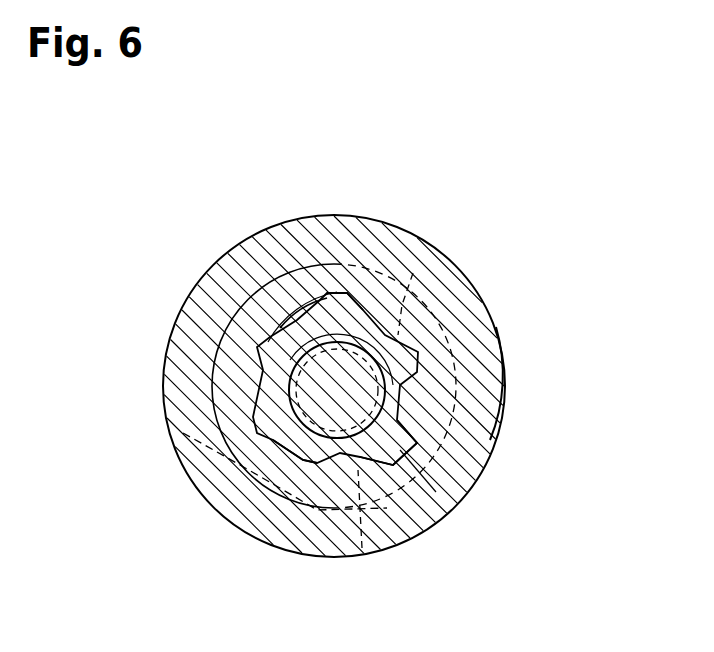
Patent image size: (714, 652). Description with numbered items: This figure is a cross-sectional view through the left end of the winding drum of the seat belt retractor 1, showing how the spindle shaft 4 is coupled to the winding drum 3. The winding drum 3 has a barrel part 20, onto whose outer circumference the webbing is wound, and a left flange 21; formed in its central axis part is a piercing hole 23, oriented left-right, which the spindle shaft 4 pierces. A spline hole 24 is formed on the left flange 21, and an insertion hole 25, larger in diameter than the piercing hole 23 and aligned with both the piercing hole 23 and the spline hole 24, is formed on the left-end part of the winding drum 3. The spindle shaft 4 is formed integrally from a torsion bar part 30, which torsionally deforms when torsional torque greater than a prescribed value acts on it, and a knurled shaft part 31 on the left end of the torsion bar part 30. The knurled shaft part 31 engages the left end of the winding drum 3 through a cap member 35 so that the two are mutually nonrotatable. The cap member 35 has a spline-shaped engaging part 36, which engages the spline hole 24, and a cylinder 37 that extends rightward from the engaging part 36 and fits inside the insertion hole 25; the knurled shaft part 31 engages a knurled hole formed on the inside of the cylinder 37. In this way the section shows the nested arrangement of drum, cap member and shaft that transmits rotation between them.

The seat belt retractor 1 is at (527, 161).
The winding drum 3 is at (511, 302).
The spindle shaft 4 is at (265, 376).
The barrel part 20 is at (268, 411).
The left flange 21 is at (505, 380).
The piercing hole 23 is at (362, 548).
The spline hole 24 is at (350, 312).
The insertion hole 25 is at (413, 273).
The torsion bar part 30 is at (235, 505).
The knurled shaft part 31 is at (430, 527).
The cap member 35 is at (284, 310).
The engaging part 36 is at (405, 429).
The cylinder 37 is at (423, 398).